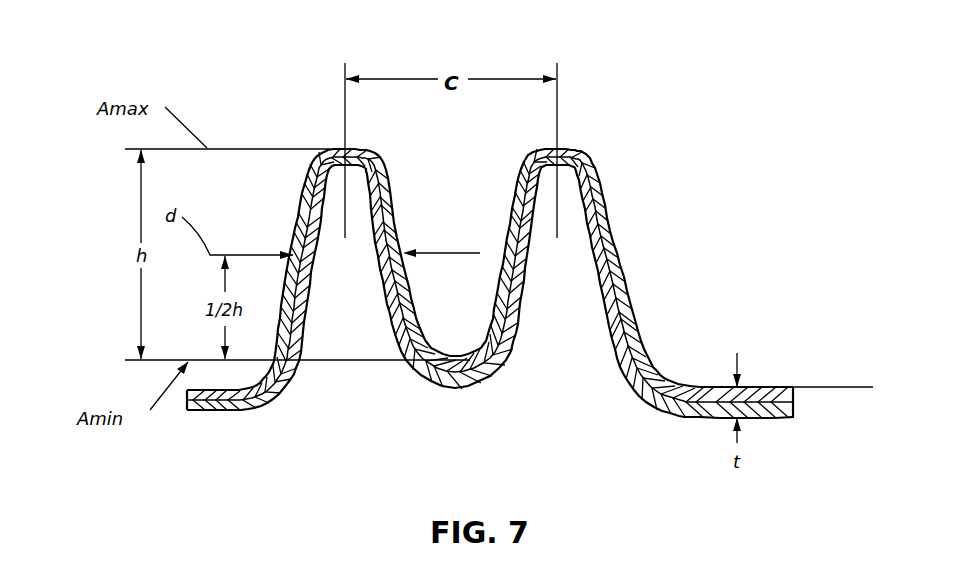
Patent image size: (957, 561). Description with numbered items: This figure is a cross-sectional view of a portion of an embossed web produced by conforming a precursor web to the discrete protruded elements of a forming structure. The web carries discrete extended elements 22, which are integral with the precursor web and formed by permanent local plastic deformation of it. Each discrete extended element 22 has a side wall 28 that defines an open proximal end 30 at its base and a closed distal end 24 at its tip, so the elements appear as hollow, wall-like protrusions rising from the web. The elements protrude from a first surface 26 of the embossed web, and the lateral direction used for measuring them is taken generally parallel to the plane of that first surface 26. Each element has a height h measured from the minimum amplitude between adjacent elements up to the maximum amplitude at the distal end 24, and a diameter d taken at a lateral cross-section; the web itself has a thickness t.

The discrete extended elements 22 is at (513, 227).
The distal end 24 is at (567, 141).
The side wall 28 is at (615, 238).
The first surface 26 is at (660, 368).
The open proximal end 30 is at (560, 357).